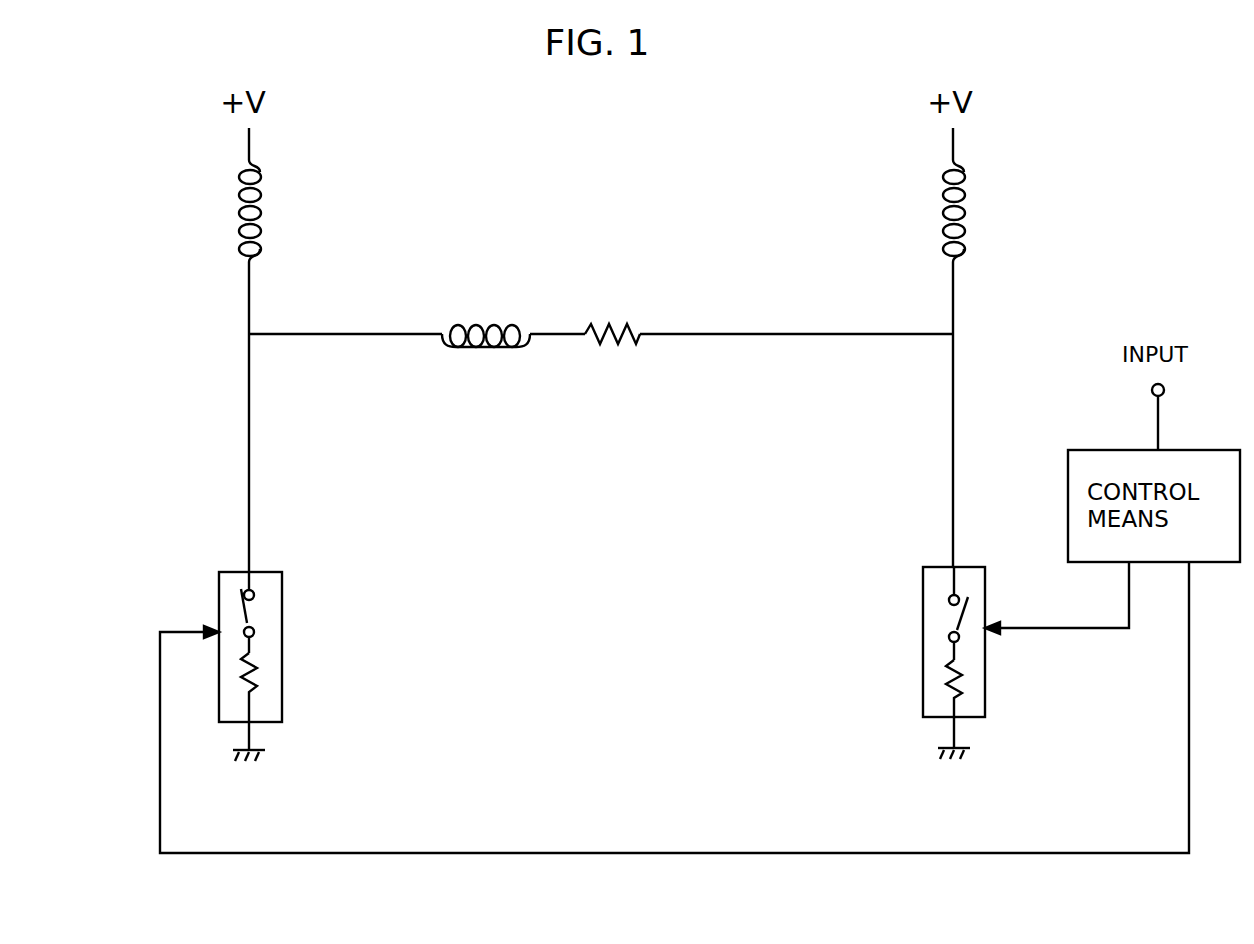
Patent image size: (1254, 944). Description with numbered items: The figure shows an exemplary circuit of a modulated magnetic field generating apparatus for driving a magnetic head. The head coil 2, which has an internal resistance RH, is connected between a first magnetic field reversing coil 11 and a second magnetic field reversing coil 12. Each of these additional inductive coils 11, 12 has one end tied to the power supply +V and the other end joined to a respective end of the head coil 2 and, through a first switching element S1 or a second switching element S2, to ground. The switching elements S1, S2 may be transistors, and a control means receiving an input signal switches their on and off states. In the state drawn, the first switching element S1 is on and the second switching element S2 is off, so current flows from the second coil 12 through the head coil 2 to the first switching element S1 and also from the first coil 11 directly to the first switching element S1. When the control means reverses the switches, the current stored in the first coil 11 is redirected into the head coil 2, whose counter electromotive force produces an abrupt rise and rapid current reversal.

The head coil 2 is at (478, 325).
The first magnetic field reversing coil 11 is at (262, 223).
The second magnetic field reversing coil 12 is at (966, 213).
The internal resistance RH is at (616, 322).
The first switching element S1 is at (282, 681).
The second switching element S2 is at (923, 683).